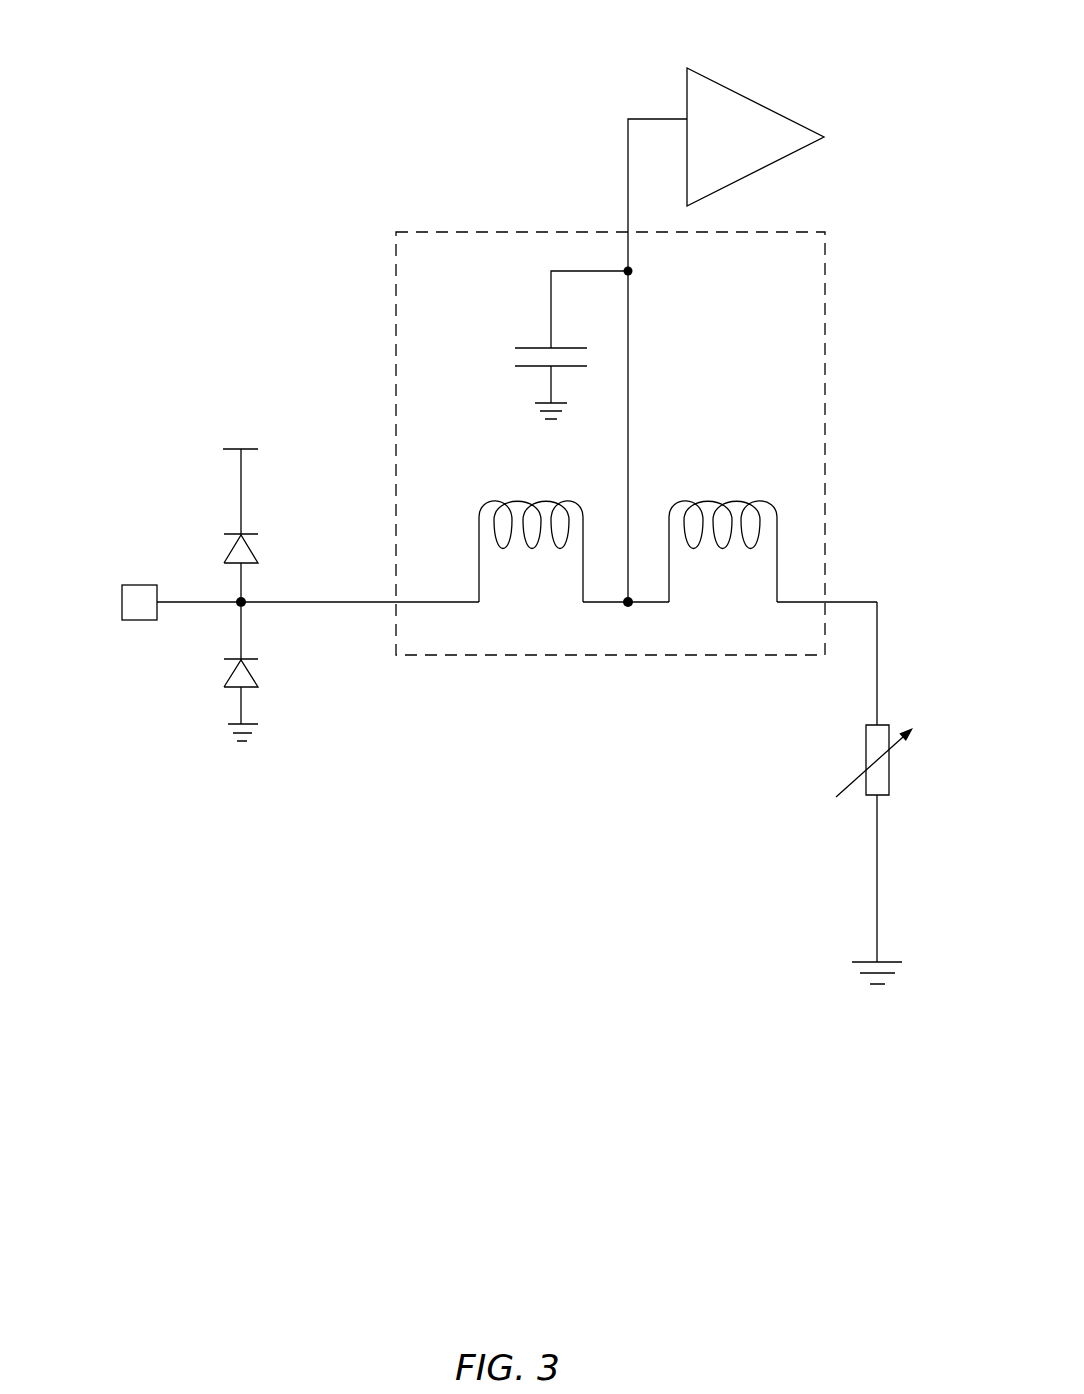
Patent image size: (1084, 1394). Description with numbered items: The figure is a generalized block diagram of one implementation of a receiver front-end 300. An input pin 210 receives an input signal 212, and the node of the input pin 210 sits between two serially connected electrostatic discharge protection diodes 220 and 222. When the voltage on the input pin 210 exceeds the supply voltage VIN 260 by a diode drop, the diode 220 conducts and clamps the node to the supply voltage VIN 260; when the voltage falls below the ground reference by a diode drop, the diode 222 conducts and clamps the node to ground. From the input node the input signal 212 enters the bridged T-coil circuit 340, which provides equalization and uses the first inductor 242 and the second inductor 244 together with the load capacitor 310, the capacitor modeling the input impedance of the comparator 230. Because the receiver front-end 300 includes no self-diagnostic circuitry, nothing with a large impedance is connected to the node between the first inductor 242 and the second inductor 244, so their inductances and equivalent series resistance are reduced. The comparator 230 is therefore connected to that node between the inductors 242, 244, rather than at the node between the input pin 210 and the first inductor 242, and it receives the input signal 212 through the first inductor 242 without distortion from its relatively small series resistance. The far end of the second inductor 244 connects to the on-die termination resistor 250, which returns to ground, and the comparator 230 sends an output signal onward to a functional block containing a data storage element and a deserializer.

The receiver front-end 300 is at (224, 82).
The input pin 210 is at (137, 583).
The input signal 212 is at (266, 605).
The diode 220 is at (227, 562).
The diode 222 is at (233, 688).
The supply voltage VIN 260 is at (232, 476).
The comparator 230 is at (757, 102).
The bridged T-coil circuit 340 is at (622, 390).
The capacitor C Load 310 is at (507, 389).
The inductor L1 242 is at (488, 505).
The inductor L2 244 is at (704, 505).
The on-die termination (ODT) resistor 250 is at (872, 797).